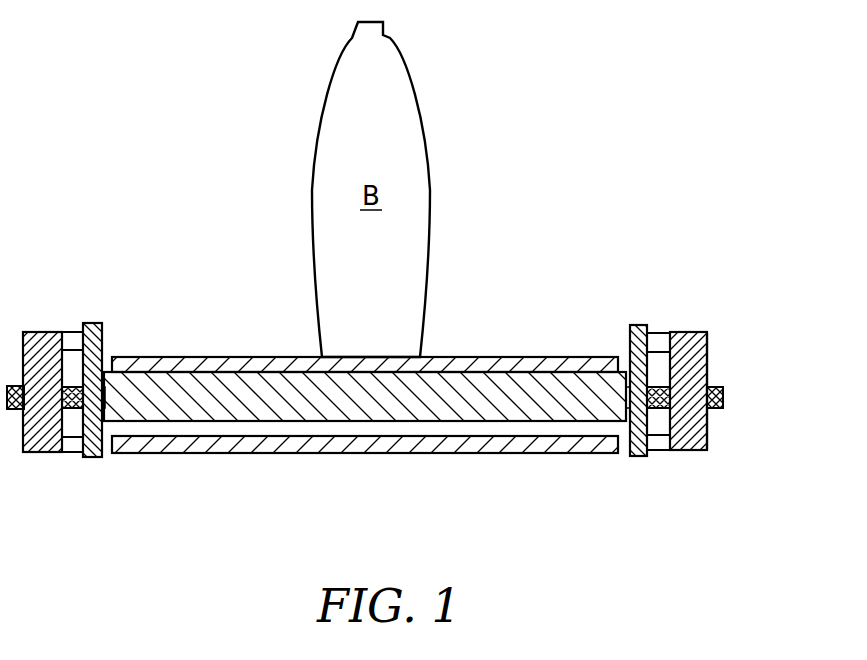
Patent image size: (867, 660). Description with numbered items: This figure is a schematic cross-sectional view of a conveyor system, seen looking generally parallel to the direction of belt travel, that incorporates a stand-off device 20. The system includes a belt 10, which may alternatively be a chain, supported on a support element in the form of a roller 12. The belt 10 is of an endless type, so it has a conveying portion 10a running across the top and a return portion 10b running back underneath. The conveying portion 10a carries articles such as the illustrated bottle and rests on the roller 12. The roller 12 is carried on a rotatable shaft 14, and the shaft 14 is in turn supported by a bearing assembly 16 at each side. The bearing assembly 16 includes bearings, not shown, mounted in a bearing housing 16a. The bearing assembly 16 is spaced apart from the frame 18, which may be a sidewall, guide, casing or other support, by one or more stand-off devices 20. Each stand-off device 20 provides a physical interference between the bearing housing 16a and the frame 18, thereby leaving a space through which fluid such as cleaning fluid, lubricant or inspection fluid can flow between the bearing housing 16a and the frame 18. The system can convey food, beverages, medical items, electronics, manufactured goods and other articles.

The belt 10 is at (567, 326).
The conveying portion 10a is at (482, 357).
The return portion 10b is at (527, 454).
The roller 12 is at (482, 402).
The rotatable shaft 14 is at (716, 385).
The bearing assembly 16 is at (692, 453).
The bearing housing 16a is at (707, 423).
The frame 18 is at (637, 457).
The stand-off device 20 is at (658, 332).